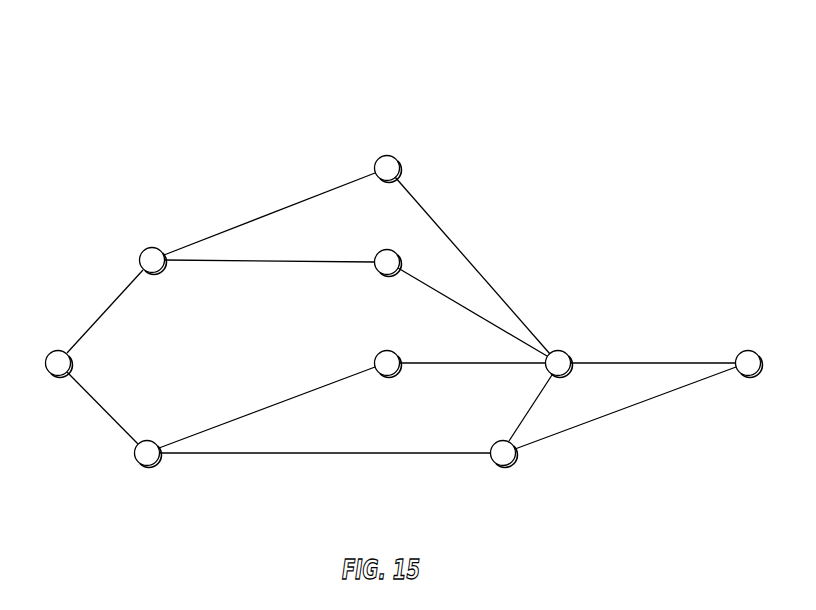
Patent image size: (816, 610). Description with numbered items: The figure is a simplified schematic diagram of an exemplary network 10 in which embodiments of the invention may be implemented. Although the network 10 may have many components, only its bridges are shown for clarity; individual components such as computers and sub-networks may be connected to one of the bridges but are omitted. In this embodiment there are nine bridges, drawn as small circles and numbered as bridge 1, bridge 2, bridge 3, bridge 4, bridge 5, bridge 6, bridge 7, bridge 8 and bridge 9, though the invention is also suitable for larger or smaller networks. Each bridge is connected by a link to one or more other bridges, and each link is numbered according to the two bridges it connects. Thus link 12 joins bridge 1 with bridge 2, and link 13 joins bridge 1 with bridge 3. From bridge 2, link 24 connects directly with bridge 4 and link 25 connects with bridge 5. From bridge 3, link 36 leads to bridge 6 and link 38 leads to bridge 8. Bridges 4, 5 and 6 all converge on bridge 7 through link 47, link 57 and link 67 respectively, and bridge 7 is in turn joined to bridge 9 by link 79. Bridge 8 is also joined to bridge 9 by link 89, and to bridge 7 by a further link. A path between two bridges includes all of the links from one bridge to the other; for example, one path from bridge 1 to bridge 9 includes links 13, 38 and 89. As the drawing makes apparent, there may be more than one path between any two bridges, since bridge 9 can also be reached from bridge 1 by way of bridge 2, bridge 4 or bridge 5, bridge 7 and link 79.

The network 10 is at (667, 86).
The bridge 1 is at (58, 350).
The bridge 2 is at (152, 247).
The bridge 3 is at (148, 467).
The bridge 4 is at (387, 155).
The bridge 5 is at (387, 249).
The bridge 6 is at (390, 376).
The bridge 7 is at (568, 352).
The bridge 8 is at (505, 467).
The bridge 9 is at (750, 350).
The link 12 is at (100, 317).
The link 13 is at (100, 405).
The link 24 is at (270, 212).
The link 25 is at (270, 263).
The link 36 is at (270, 407).
The link 38 is at (350, 454).
The link 47 is at (474, 266).
The link 57 is at (440, 294).
The link 67 is at (470, 362).
The link 79 is at (652, 362).
The link 89 is at (625, 410).